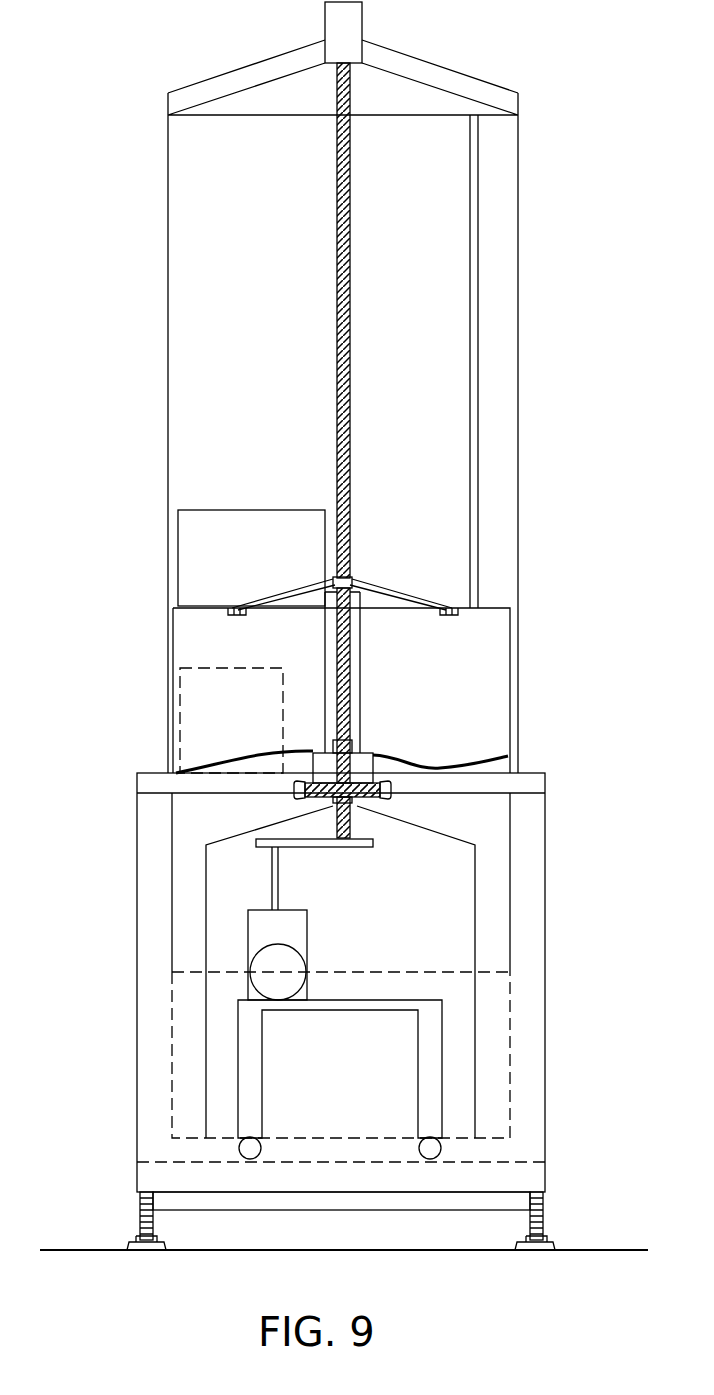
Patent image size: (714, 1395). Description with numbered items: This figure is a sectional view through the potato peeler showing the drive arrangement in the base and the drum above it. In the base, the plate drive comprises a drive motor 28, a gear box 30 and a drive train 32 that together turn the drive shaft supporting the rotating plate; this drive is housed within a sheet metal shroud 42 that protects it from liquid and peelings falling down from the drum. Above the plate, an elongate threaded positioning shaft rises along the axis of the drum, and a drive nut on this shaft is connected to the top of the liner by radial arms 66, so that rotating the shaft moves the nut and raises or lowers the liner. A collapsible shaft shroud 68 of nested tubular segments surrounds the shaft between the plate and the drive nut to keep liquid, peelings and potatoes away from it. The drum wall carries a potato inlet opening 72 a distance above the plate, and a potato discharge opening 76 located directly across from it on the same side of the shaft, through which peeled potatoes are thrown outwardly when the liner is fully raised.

The radial arms 66 is at (470, 262).
The potato inlet opening 72 is at (260, 559).
The collapsible shaft shroud 68 is at (374, 668).
The potato discharge opening 76 is at (242, 726).
The sheet metal shroud 42 is at (432, 832).
The drive train 32 is at (370, 832).
The gear box 30 is at (307, 918).
The drive motor 28 is at (290, 944).